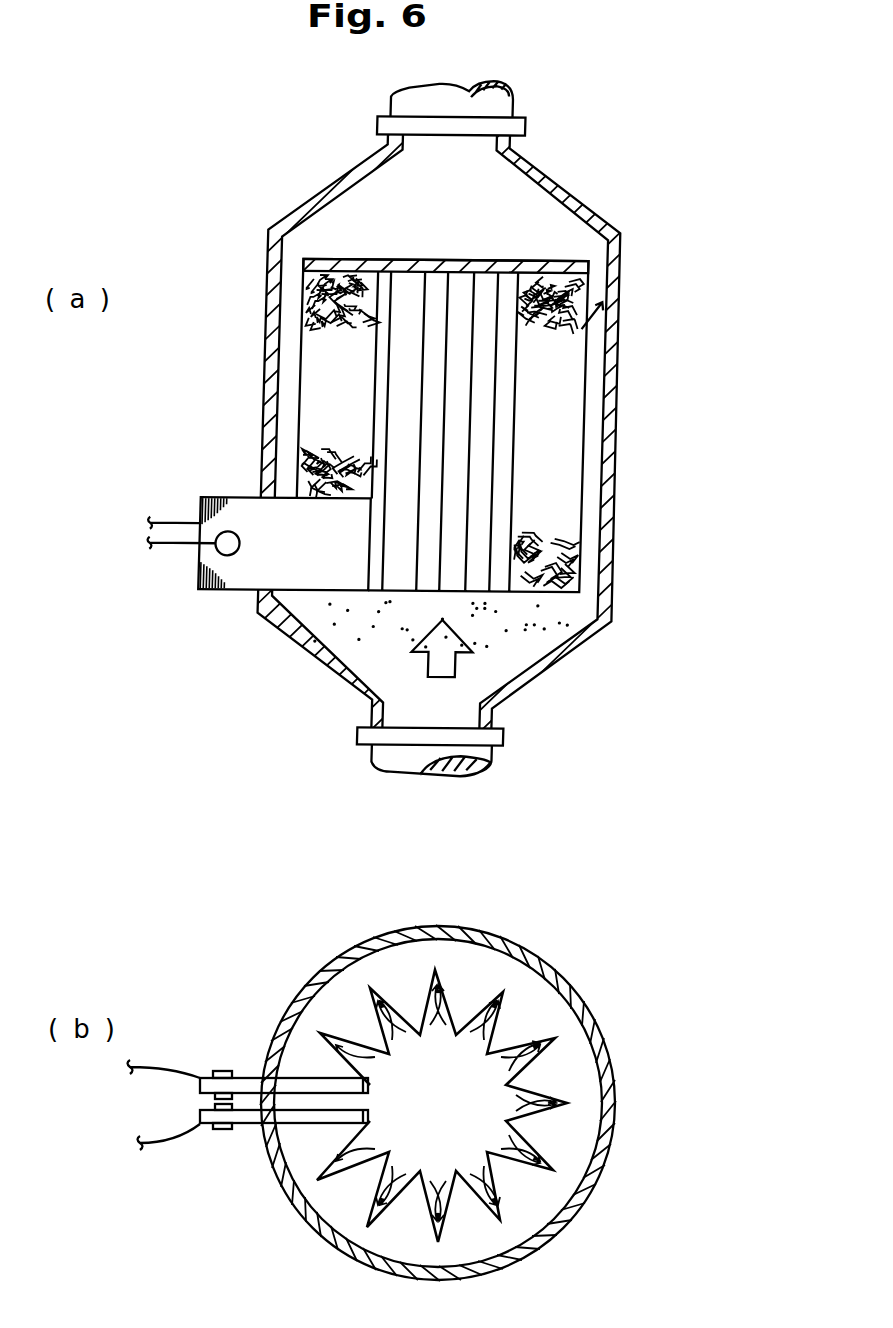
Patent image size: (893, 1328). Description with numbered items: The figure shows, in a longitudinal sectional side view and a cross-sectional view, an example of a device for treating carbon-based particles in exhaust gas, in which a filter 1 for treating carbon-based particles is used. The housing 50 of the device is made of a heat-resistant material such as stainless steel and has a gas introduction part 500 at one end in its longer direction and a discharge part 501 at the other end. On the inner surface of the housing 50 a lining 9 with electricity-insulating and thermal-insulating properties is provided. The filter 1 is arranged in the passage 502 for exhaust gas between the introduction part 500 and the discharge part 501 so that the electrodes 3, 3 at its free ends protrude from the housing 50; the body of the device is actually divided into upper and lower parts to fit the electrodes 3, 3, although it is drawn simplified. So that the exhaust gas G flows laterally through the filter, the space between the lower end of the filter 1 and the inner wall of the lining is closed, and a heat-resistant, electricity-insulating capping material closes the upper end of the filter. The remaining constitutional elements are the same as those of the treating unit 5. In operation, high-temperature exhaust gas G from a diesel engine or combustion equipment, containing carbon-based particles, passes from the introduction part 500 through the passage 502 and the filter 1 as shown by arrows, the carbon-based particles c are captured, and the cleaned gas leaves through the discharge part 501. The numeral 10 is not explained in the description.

The filter for treating carbon-based particles 1 is at (446, 697).
The electrodes 3 is at (274, 573).
The treating unit 5 is at (630, 313).
The lining 9 is at (610, 407).
The housing 50 is at (616, 266).
The filter element 10 is at (420, 374).
The discharge part 501 is at (445, 143).
The passage for exhaust gas 502 is at (398, 253).
The gas introduction part 500 is at (455, 717).
The exhaust gas G is at (437, 667).
The carbon-based particles c is at (497, 618).